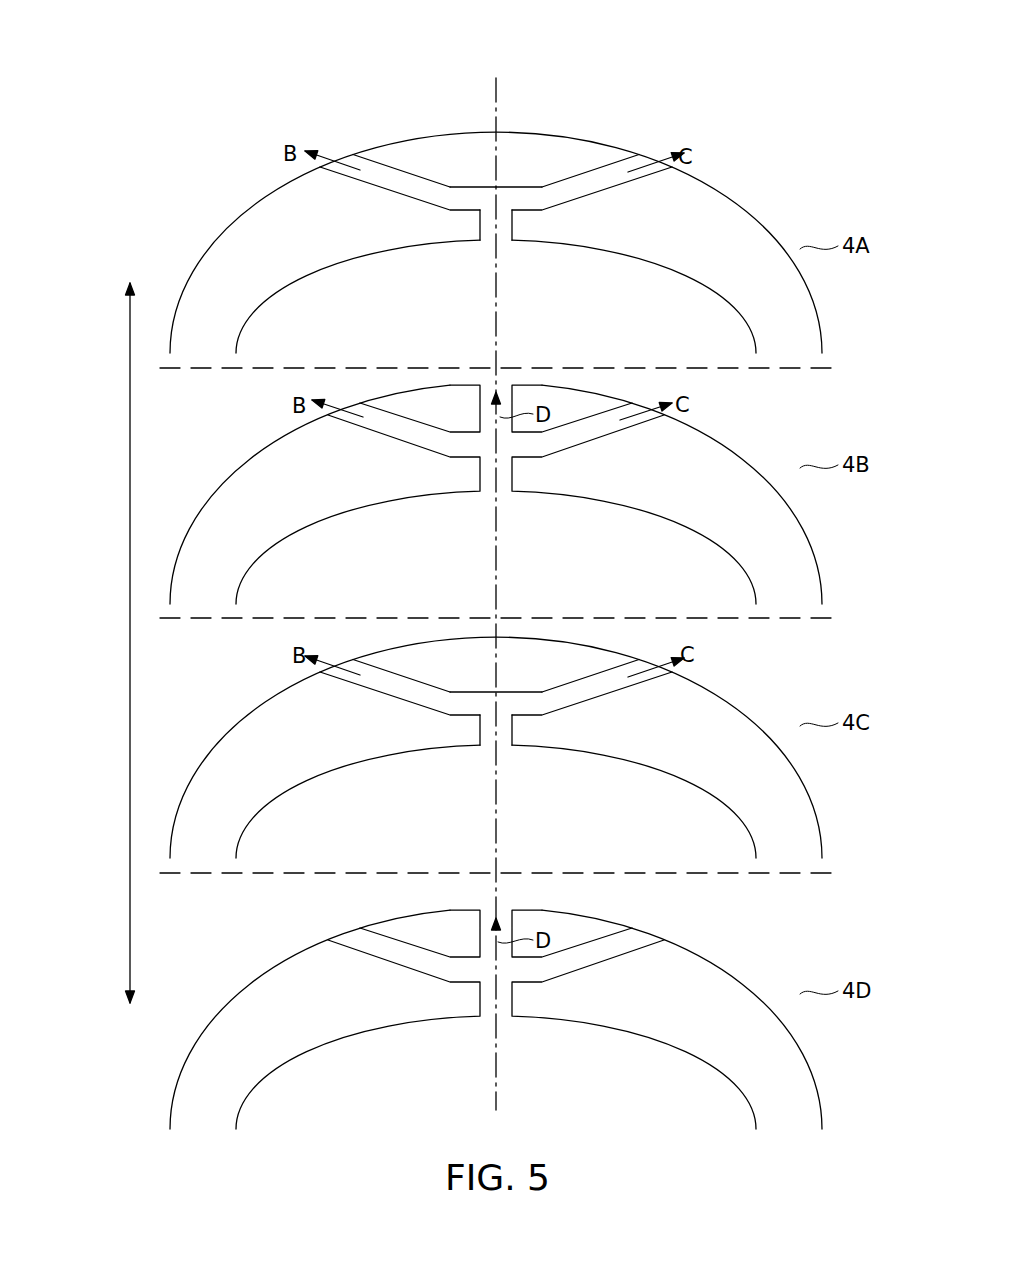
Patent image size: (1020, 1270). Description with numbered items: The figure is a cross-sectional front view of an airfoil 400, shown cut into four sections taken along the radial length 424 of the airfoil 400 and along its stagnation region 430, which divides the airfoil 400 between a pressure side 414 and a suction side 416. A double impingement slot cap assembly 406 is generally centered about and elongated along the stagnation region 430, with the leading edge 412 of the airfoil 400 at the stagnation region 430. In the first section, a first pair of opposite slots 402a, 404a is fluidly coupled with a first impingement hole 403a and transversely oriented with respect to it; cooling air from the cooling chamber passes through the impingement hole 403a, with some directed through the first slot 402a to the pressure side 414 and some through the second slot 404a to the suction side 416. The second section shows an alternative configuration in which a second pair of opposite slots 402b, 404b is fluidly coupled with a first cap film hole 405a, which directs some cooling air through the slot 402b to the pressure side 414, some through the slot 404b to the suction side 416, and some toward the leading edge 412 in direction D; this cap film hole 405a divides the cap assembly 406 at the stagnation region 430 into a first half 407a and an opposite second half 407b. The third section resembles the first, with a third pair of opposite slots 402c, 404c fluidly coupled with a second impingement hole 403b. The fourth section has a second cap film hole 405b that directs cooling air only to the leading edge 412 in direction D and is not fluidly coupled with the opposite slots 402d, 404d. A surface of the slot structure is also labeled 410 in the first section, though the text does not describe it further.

The airfoil 400 is at (706, 67).
The leading edge 412 is at (445, 132).
The first slot 402a is at (390, 182).
The first slot 402b is at (377, 424).
The first slot 402c is at (378, 680).
The first slot 402d is at (385, 950).
The second slot 404a is at (647, 152).
The second slot 404b is at (633, 420).
The second slot 404c is at (625, 680).
The second slot 404d is at (630, 948).
The double impingement slot cap assembly 406 is at (546, 150).
The inclined surface 410 is at (600, 167).
The first impingement hole 403a is at (503, 236).
The second impingement hole 403b is at (503, 741).
The first cap film hole 405a is at (495, 482).
The second cap film hole 405b is at (494, 1005).
The first half 407a is at (414, 405).
The second half 407b is at (578, 414).
The pressure side 414 is at (268, 182).
The suction side 416 is at (722, 182).
The radial length 424 is at (128, 588).
The stagnation region 430 is at (500, 1093).